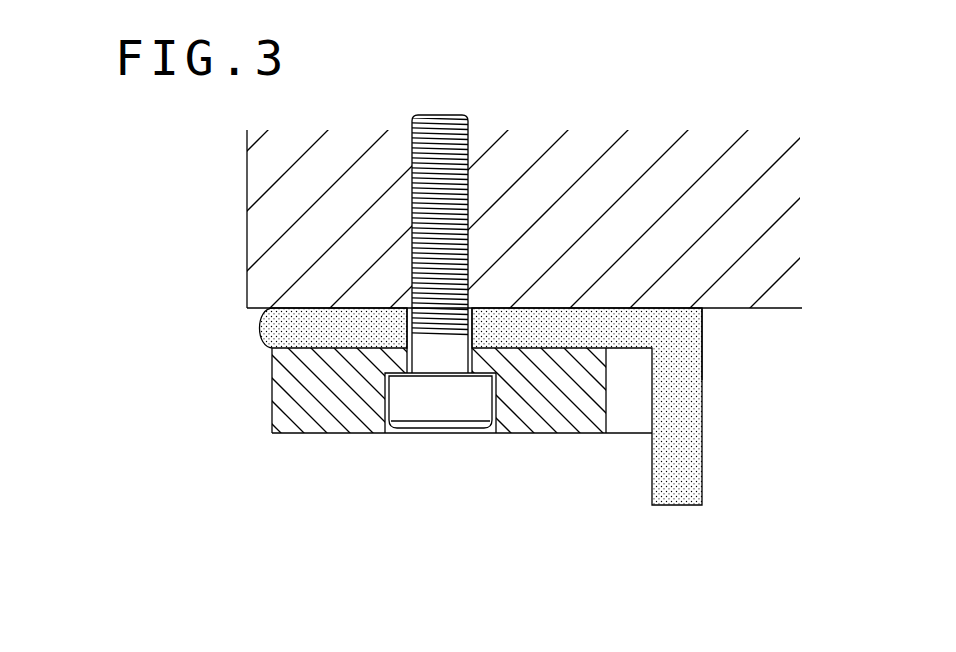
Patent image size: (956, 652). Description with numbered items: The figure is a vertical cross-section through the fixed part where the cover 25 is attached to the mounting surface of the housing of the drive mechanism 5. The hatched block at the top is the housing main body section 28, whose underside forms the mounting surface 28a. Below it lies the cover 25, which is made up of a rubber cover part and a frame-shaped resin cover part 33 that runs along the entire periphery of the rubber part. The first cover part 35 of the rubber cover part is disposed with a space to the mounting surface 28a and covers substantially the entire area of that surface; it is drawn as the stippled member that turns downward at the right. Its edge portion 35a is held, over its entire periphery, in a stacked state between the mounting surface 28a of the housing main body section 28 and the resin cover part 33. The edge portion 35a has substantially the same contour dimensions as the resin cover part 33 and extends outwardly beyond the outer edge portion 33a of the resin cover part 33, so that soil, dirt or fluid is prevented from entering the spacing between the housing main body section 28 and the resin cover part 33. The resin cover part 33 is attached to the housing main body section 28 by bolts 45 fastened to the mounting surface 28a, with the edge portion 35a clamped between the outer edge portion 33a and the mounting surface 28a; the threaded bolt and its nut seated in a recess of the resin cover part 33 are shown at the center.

The drive mechanism 5 is at (188, 163).
The housing main body section 28 is at (247, 210).
The mounting surface 28a is at (727, 316).
The first cover part 35 is at (652, 482).
The edge portion 35a is at (262, 327).
The resin cover part 33 is at (339, 433).
The outer edge portion 33a is at (272, 393).
The bolt 45 is at (432, 408).
The cover 25 is at (490, 503).